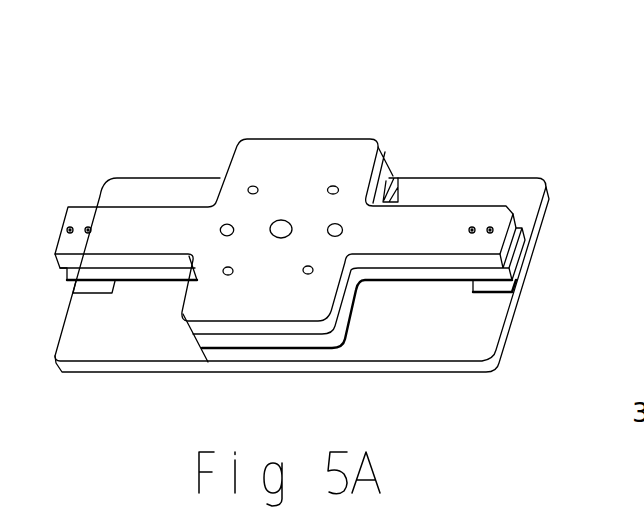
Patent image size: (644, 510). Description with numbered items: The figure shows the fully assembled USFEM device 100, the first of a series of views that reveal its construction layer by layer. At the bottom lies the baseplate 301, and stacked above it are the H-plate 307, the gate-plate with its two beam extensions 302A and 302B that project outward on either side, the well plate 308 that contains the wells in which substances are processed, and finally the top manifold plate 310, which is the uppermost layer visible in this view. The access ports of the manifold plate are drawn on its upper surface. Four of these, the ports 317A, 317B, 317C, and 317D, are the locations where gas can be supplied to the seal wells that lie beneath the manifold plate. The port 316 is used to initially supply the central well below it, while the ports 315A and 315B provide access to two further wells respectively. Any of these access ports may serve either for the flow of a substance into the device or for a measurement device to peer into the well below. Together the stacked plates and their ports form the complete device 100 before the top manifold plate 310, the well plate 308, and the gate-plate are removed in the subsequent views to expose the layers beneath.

The USFEM device 100 is at (332, 247).
The baseplate 301 is at (117, 197).
The beam extension 302A is at (150, 273).
The beam extension 302B is at (462, 277).
The H-plate 307 is at (395, 182).
The well plate 308 is at (394, 168).
The top manifold plate 310 is at (293, 172).
The port 315A is at (222, 235).
The port 315B is at (340, 235).
The port 316 is at (282, 238).
The port 317A is at (228, 276).
The port 317B is at (253, 195).
The port 317C is at (303, 276).
The port 317D is at (338, 195).